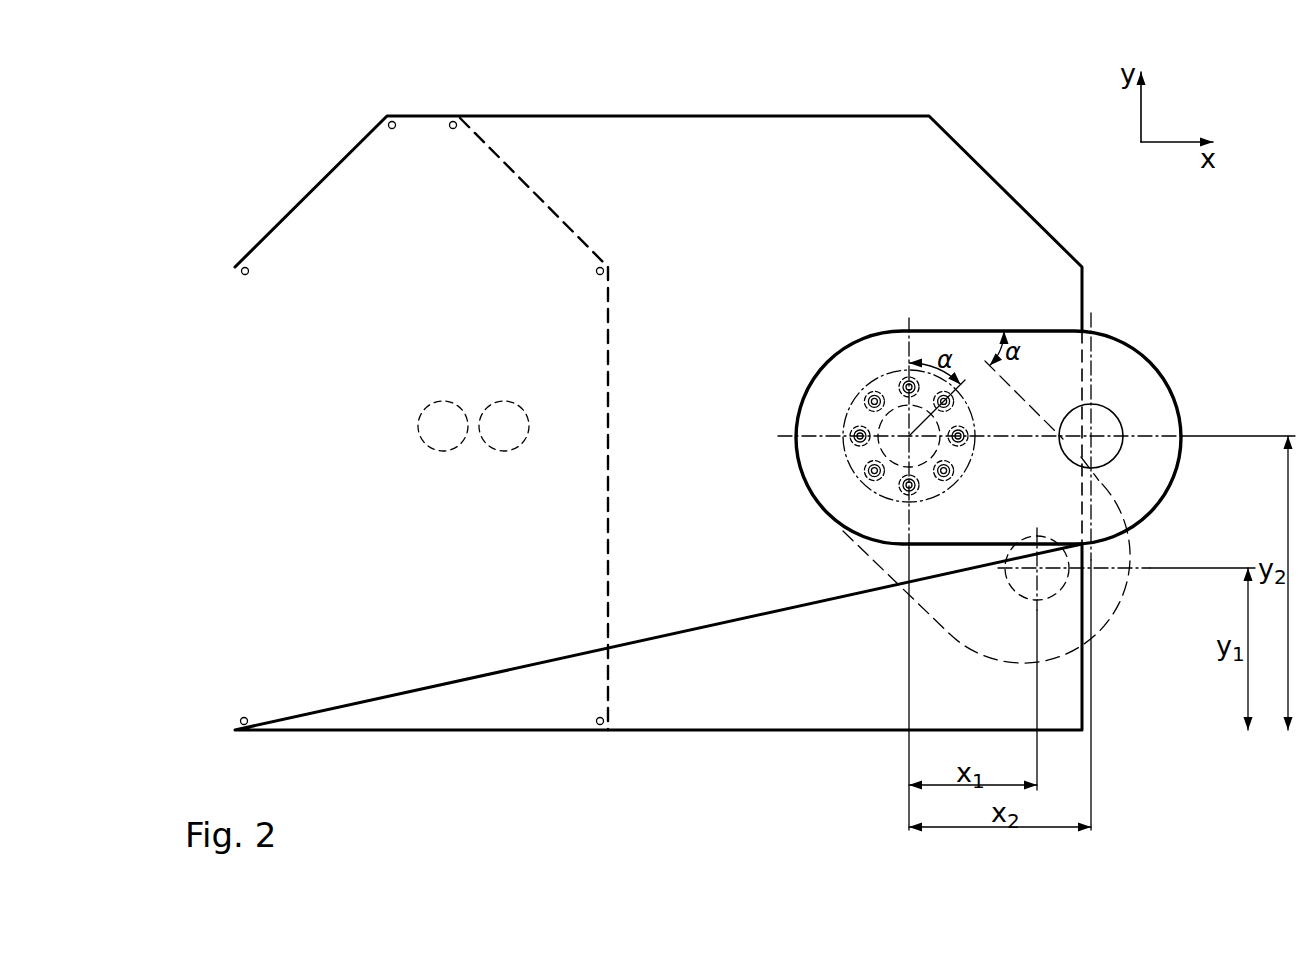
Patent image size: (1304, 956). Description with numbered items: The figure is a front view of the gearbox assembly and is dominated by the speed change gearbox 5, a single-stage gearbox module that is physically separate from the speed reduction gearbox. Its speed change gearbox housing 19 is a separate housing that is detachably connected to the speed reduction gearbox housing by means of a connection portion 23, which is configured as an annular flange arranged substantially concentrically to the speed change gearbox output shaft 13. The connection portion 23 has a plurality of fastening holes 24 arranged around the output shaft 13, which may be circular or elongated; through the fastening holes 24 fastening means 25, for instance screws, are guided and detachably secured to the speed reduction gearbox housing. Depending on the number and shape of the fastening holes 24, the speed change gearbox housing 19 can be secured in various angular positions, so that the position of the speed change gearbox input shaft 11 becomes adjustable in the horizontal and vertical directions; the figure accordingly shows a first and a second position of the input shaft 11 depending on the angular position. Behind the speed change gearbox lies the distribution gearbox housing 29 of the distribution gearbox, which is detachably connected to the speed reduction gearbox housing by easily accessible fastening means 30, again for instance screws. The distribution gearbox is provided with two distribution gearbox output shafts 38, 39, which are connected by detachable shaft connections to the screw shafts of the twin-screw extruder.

The speed change gearbox 5 is at (1152, 351).
The speed change gearbox input shaft 11 is at (1127, 428).
The speed change gearbox output shaft 13 is at (897, 407).
The speed change gearbox housing 19 is at (1172, 385).
The connection portion 23 is at (950, 396).
The fastening holes 24 is at (858, 430).
The fastening means 25 is at (852, 436).
The distribution gearbox housing 29 is at (442, 124).
The fastening means 30 is at (391, 116).
The distribution gearbox output shaft 38 is at (495, 438).
The distribution gearbox output shaft 39 is at (430, 413).